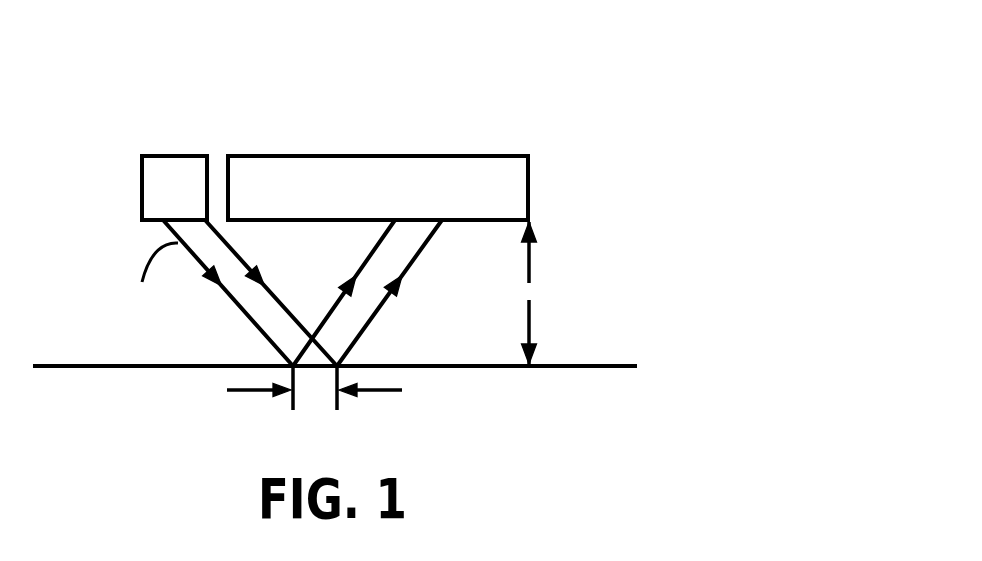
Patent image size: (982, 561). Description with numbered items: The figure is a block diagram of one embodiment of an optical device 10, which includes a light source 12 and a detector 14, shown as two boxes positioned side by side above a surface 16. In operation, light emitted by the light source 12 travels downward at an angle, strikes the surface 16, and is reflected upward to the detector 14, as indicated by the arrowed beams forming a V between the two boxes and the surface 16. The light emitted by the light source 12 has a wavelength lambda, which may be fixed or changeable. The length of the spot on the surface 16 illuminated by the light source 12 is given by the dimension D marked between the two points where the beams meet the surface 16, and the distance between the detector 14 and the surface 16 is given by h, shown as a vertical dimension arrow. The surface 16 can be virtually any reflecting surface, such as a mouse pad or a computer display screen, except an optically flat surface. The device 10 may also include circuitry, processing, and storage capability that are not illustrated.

The optical device 10 is at (355, 38).
The light source 12 is at (175, 178).
The detector 14 is at (507, 178).
The surface 16 is at (583, 366).